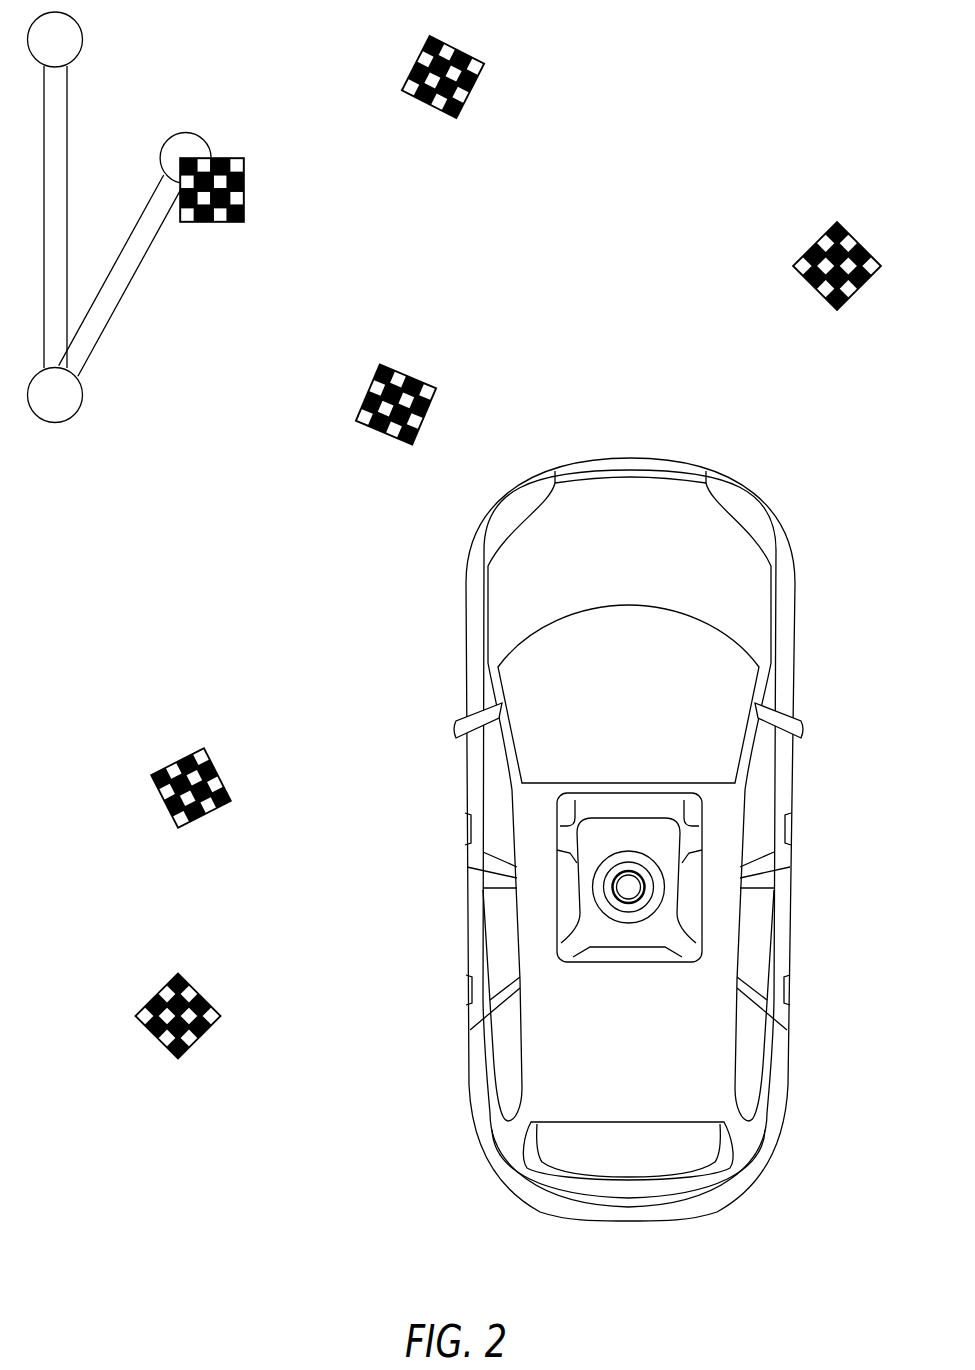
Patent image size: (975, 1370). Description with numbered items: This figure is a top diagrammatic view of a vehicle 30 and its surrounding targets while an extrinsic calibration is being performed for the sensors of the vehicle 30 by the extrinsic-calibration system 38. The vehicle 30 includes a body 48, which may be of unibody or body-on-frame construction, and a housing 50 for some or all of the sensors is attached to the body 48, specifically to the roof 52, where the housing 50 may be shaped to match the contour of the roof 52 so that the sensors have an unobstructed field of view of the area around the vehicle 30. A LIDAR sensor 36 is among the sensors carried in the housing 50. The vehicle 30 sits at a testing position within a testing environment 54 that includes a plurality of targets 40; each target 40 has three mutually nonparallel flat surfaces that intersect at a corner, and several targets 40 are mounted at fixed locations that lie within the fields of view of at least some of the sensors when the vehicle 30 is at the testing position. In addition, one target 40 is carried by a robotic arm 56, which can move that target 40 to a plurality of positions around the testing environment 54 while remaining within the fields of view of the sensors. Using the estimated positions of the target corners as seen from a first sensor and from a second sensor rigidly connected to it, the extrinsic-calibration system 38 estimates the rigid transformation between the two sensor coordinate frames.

The vehicle 30 is at (793, 610).
The LIDAR sensor 36 is at (643, 890).
The extrinsic-calibration system 38 is at (772, 72).
The target 40 is at (478, 81).
The body 48 is at (787, 1048).
The housing 50 is at (702, 907).
The roof 52 is at (581, 1049).
The testing environment 54 is at (210, 590).
The robotic arm 56 is at (69, 110).